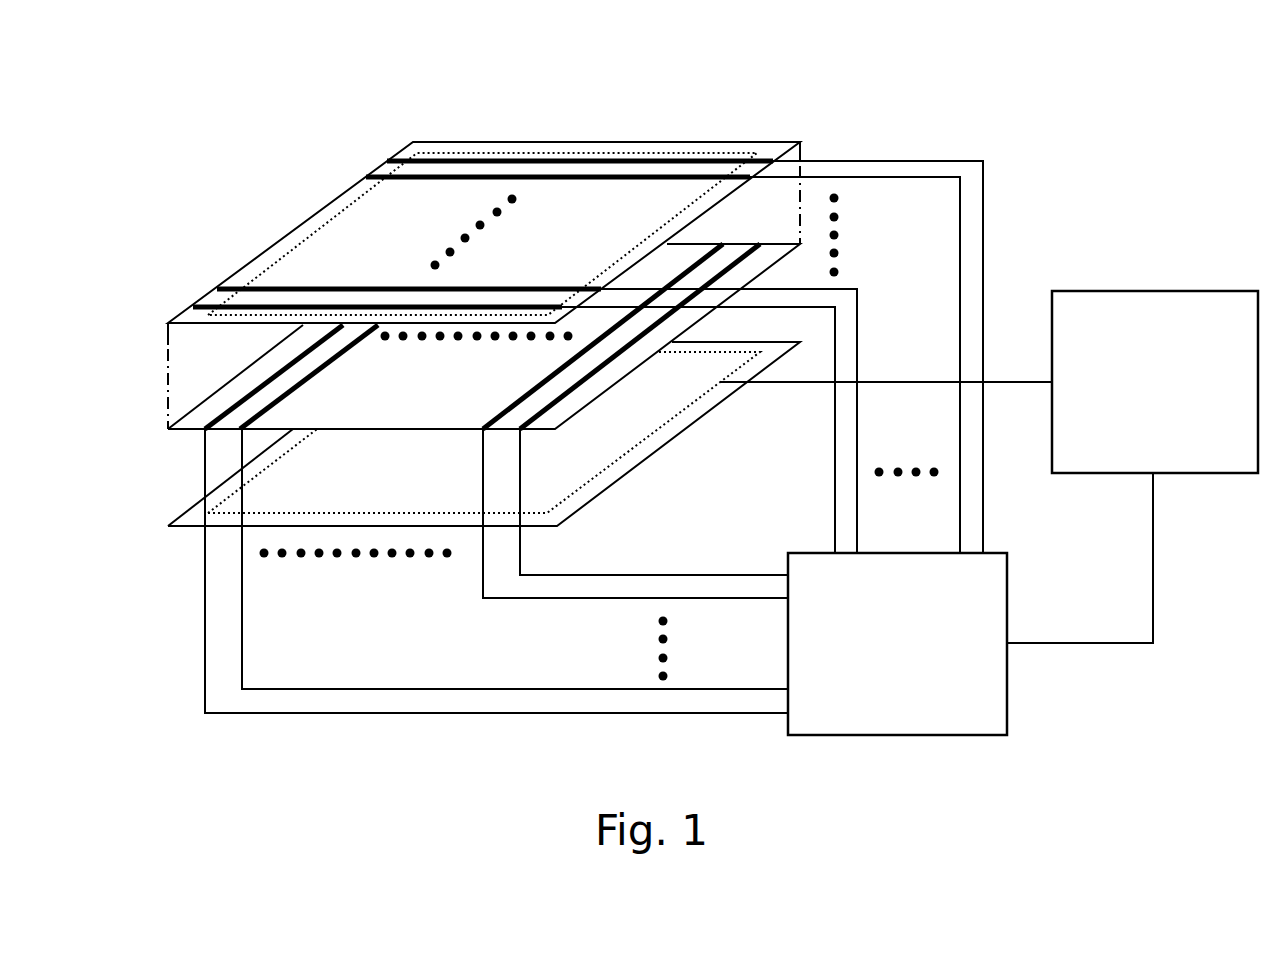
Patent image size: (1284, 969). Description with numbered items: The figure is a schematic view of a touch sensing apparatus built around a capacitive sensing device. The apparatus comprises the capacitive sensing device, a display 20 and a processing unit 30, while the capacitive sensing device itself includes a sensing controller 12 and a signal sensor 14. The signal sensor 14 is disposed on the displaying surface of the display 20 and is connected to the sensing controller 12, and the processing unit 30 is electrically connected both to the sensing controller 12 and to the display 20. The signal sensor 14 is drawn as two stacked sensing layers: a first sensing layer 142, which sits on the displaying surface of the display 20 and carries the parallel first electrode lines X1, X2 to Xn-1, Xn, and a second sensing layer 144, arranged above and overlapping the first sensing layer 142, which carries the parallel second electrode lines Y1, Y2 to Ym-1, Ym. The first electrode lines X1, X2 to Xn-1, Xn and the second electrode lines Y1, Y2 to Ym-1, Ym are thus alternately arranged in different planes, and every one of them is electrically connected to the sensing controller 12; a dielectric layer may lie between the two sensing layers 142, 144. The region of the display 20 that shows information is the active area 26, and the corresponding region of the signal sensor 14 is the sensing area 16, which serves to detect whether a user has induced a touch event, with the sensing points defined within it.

The sensing controller 12 is at (913, 737).
The signal sensor 14 is at (152, 323).
The first sensing layer 142 is at (188, 430).
The second sensing layer 144 is at (448, 142).
The sensing area 16 is at (323, 227).
The display 20 is at (188, 528).
The active area 26 is at (580, 490).
The processing unit 30 is at (1143, 291).
The first electrode line X1 is at (283, 373).
The first electrode line X2 is at (353, 345).
The first electrode line Xn-1 is at (547, 403).
The first electrode line Xn is at (590, 377).
The second electrode line Y1 is at (320, 306).
The second electrode line Y2 is at (497, 288).
The second electrode line Ym-1 is at (603, 175).
The second electrode line Ym is at (517, 158).